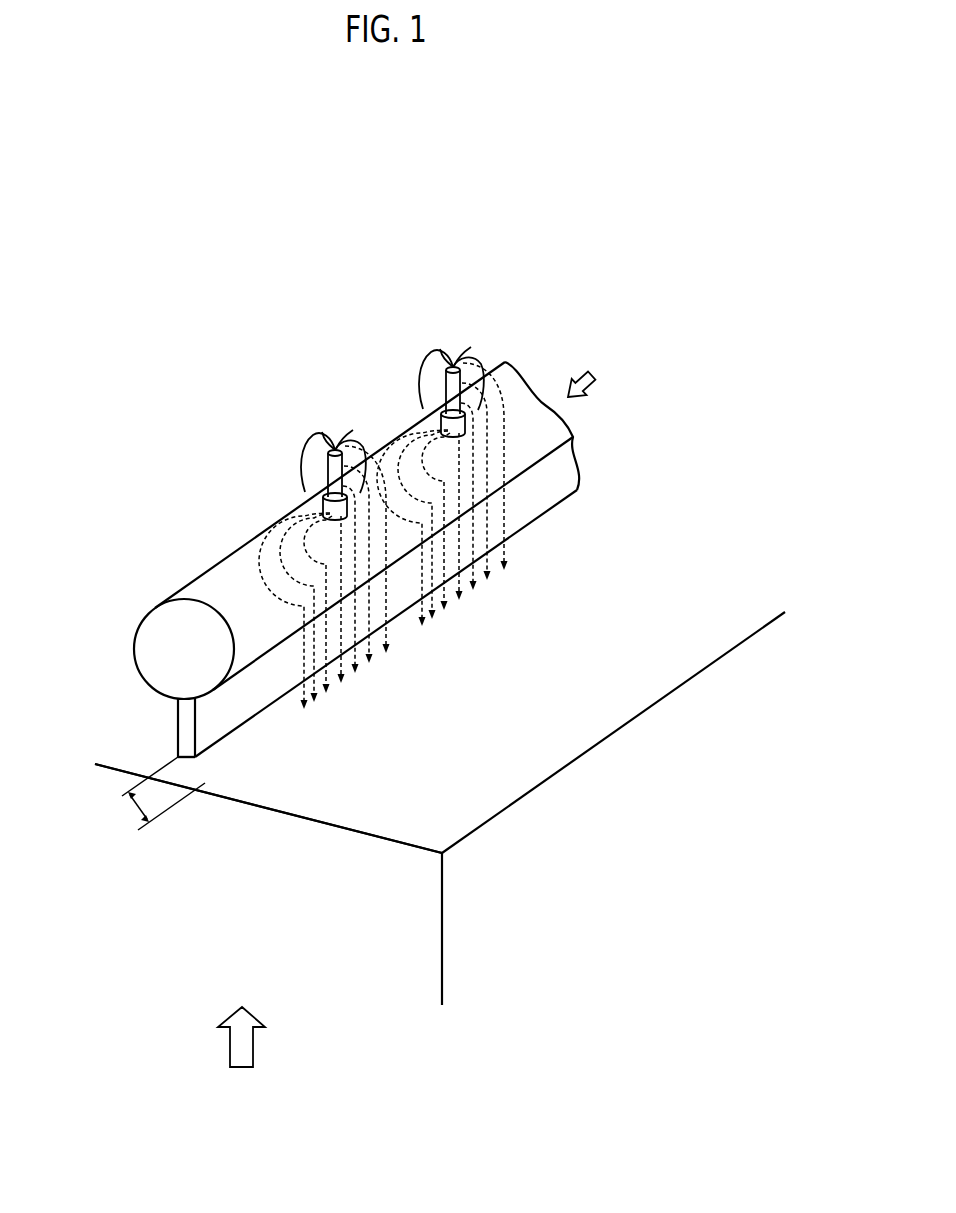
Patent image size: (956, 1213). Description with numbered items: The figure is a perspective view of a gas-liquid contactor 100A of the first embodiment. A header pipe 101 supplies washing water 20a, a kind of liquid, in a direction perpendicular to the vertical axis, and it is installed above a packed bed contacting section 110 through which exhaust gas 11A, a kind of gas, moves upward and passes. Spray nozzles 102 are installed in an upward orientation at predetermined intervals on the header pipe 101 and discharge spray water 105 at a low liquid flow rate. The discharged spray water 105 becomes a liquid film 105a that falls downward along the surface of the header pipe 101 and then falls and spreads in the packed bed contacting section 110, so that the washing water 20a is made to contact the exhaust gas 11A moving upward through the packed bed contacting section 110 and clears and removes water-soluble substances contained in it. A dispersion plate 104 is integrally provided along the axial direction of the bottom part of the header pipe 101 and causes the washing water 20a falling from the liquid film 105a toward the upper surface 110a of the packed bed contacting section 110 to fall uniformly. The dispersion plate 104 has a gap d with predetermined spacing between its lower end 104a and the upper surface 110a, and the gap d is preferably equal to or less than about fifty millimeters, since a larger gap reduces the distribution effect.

The gas-liquid contactor 100A is at (235, 296).
The header pipe 101 is at (232, 573).
The spray nozzle 102 is at (327, 466).
The dispersion plate 104 is at (178, 714).
The lower end of dispersion plate 104a is at (185, 758).
The spray water 105 is at (337, 449).
The liquid film 105a is at (512, 515).
The packed bed contacting section 110 is at (452, 884).
The upper surface of packed bed section 110a is at (328, 784).
The washing water 20a is at (590, 373).
The exhaust gas 11A is at (254, 1040).
The gap d is at (161, 796).